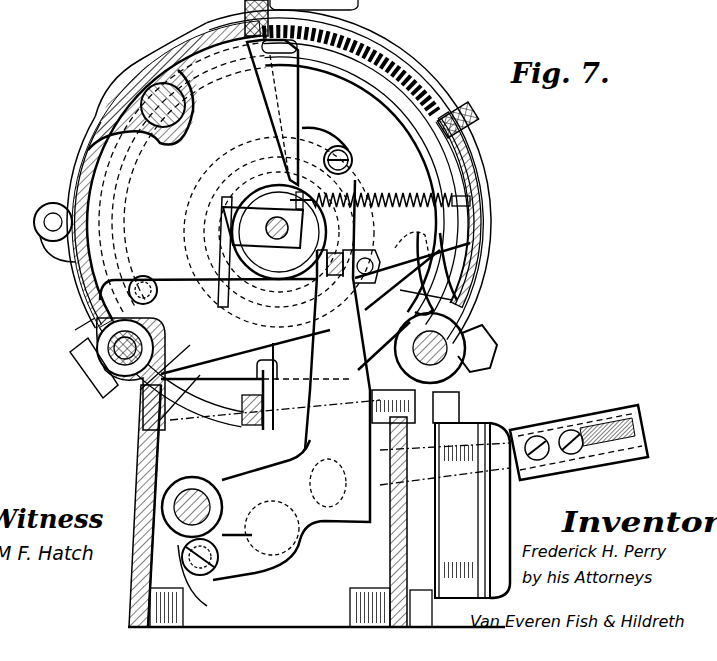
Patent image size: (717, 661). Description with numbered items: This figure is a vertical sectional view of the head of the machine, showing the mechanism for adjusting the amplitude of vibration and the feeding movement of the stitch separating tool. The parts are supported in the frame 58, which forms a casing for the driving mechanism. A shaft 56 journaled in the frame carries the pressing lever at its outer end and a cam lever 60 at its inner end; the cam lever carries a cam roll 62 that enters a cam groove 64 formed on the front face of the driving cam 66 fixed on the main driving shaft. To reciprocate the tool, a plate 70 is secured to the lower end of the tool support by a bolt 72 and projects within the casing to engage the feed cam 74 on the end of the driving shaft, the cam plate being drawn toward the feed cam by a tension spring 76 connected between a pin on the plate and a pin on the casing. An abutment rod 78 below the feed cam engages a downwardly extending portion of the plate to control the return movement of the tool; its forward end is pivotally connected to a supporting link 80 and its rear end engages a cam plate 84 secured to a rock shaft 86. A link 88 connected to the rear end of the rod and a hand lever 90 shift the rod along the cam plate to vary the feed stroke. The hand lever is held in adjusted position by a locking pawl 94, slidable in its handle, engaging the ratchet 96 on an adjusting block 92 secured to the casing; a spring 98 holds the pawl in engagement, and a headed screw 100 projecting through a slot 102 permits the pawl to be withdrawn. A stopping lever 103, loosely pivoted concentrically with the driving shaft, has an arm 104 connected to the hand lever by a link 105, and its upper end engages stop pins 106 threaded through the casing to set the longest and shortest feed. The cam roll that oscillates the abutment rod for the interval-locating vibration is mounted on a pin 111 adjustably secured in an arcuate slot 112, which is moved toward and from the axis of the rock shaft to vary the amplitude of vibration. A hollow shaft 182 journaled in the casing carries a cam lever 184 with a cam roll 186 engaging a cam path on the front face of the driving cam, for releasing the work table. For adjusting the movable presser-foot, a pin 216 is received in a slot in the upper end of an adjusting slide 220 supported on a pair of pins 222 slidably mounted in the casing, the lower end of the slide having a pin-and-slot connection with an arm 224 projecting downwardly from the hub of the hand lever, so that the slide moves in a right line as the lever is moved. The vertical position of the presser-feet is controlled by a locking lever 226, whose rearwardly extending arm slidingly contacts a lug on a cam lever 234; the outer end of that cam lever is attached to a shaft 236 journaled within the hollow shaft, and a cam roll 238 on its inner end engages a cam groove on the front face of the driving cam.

The shaft 56 is at (145, 98).
The frame 58 is at (98, 143).
The cam lever 60 is at (78, 157).
The cam roll 62 is at (84, 292).
The cam groove 64 is at (70, 186).
The driving cam 66 is at (375, 90).
The plate 70 is at (232, 197).
The bolt 72 is at (266, 228).
The feed cam 74 is at (279, 232).
The tension spring 76 is at (478, 193).
The abutment rod 78 is at (412, 252).
The supporting link 80 is at (273, 438).
The cam plate 84 is at (450, 272).
The rock shaft 86 is at (473, 340).
The link 88 is at (450, 297).
The hand lever 90 is at (233, 517).
The adjusting block 92 is at (512, 497).
The locking pawl 94 is at (512, 442).
The ratchet 96 is at (513, 508).
The spring 98 is at (614, 413).
The headed screw 100 is at (582, 450).
The slot 102 is at (559, 440).
The stopping lever 103 is at (290, 70).
The arm 104 is at (302, 178).
The link 105 is at (345, 160).
The stop pins 106 is at (245, 4).
The pin 111 is at (470, 150).
The arcuate slot 112 is at (473, 138).
The hollow shaft 182 is at (100, 357).
The cam lever 184 is at (145, 388).
The cam roll 186 is at (463, 315).
The pin 216 is at (322, 263).
The adjusting slide 220 is at (312, 456).
The pins 222 is at (450, 400).
The arm 224 is at (200, 595).
The locking lever 226 is at (240, 417).
The cam lever 234 is at (140, 427).
The shaft 236 is at (110, 347).
The cam roll 238 is at (220, 274).